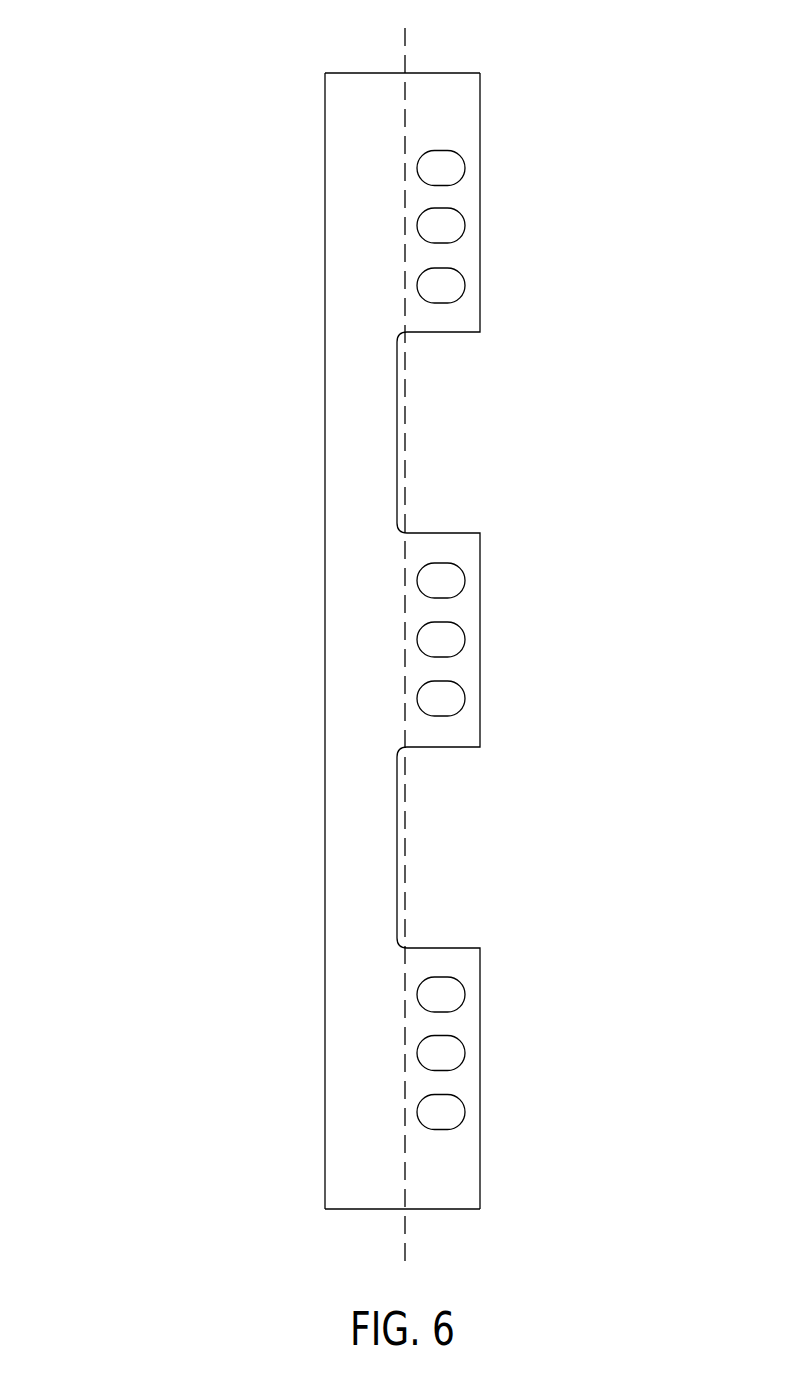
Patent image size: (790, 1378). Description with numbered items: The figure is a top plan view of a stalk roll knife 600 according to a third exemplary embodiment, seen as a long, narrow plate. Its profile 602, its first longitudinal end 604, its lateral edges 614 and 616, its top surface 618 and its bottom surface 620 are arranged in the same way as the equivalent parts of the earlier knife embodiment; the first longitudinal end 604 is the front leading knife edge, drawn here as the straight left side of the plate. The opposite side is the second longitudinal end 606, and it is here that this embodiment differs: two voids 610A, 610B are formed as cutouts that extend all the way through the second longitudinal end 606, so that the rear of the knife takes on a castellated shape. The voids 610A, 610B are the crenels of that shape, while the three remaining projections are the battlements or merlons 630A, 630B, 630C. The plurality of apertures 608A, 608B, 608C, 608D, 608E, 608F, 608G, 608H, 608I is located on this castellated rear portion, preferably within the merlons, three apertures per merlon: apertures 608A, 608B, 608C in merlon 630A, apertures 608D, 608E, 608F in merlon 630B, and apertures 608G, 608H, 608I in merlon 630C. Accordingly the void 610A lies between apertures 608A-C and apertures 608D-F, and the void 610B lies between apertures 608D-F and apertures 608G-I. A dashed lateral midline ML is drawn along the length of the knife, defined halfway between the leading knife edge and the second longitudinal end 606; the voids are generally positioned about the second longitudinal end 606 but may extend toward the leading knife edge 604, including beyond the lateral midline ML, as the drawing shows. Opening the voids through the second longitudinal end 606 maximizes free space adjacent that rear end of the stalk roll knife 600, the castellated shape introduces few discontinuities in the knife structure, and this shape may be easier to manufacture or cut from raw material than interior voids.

The stalk roll knife 600 is at (140, 526).
The profile 602 is at (312, 951).
The first longitudinal end 604 is at (325, 1156).
The second longitudinal end 606 is at (480, 1185).
The aperture 608A is at (465, 161).
The aperture 608B is at (465, 222).
The aperture 608C is at (465, 286).
The aperture 608D is at (465, 574).
The aperture 608E is at (465, 636).
The aperture 608F is at (465, 697).
The aperture 608G is at (465, 988).
The aperture 608H is at (465, 1047).
The aperture 608I is at (465, 1108).
The void 610A is at (445, 438).
The void 610B is at (445, 846).
The lateral edge 614 is at (355, 73).
The lateral edge 616 is at (355, 1209).
The top surface 618 is at (325, 267).
The bottom surface 620 is at (313, 150).
The merlon 630A is at (458, 113).
The merlon 630B is at (445, 542).
The merlon 630C is at (445, 955).
The lateral midline ML is at (407, 102).